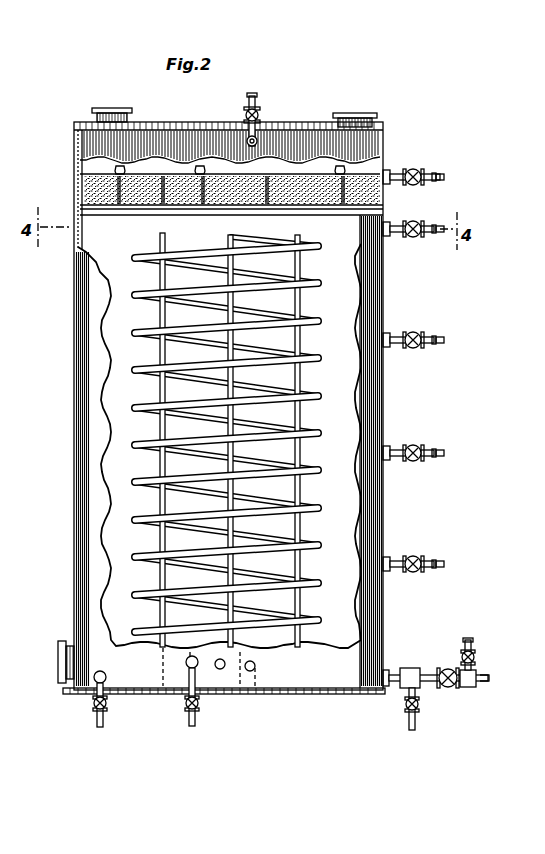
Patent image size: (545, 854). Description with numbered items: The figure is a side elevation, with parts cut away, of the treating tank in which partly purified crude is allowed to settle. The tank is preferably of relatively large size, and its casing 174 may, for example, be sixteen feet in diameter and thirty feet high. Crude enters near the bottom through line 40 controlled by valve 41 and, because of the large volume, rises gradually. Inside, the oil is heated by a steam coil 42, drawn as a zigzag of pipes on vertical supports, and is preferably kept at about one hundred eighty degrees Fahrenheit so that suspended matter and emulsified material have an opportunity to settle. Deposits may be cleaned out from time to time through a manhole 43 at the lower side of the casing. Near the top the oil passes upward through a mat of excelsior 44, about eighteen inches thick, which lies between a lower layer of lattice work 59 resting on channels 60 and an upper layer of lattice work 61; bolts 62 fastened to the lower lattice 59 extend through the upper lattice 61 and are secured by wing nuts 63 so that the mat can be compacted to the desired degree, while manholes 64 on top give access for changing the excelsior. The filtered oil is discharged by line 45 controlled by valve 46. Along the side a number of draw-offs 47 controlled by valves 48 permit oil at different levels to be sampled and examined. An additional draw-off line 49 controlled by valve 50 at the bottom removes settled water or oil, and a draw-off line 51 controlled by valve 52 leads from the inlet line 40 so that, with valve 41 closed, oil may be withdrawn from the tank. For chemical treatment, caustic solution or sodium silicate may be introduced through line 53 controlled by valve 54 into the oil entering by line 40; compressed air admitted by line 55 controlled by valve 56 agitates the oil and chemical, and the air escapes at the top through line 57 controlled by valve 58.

The line 40 is at (472, 682).
The valve 41 is at (444, 670).
The steam coil 42 is at (314, 470).
The manhole 43 is at (58, 652).
The mat of excelsior 44 is at (82, 180).
The line 45 is at (438, 172).
The valve 46 is at (413, 168).
The draw-offs 47 is at (428, 236).
The valves 48 is at (412, 238).
The draw-off line 49 is at (108, 704).
The valve 50 is at (94, 703).
The draw-off line 51 is at (418, 722).
The valve 52 is at (406, 706).
The line 53 is at (474, 648).
The valve 54 is at (476, 658).
The line 55 is at (196, 722).
The valve 56 is at (200, 705).
The line 57 is at (257, 100).
The valve 58 is at (260, 120).
The lower layer of lattice work 59 is at (330, 212).
The channels 60 is at (128, 217).
The upper layer of lattice work 61 is at (392, 190).
The bolts 62 is at (188, 186).
The wing nuts 63 is at (118, 168).
The manholes 64 is at (108, 110).
The casing 174 is at (74, 426).